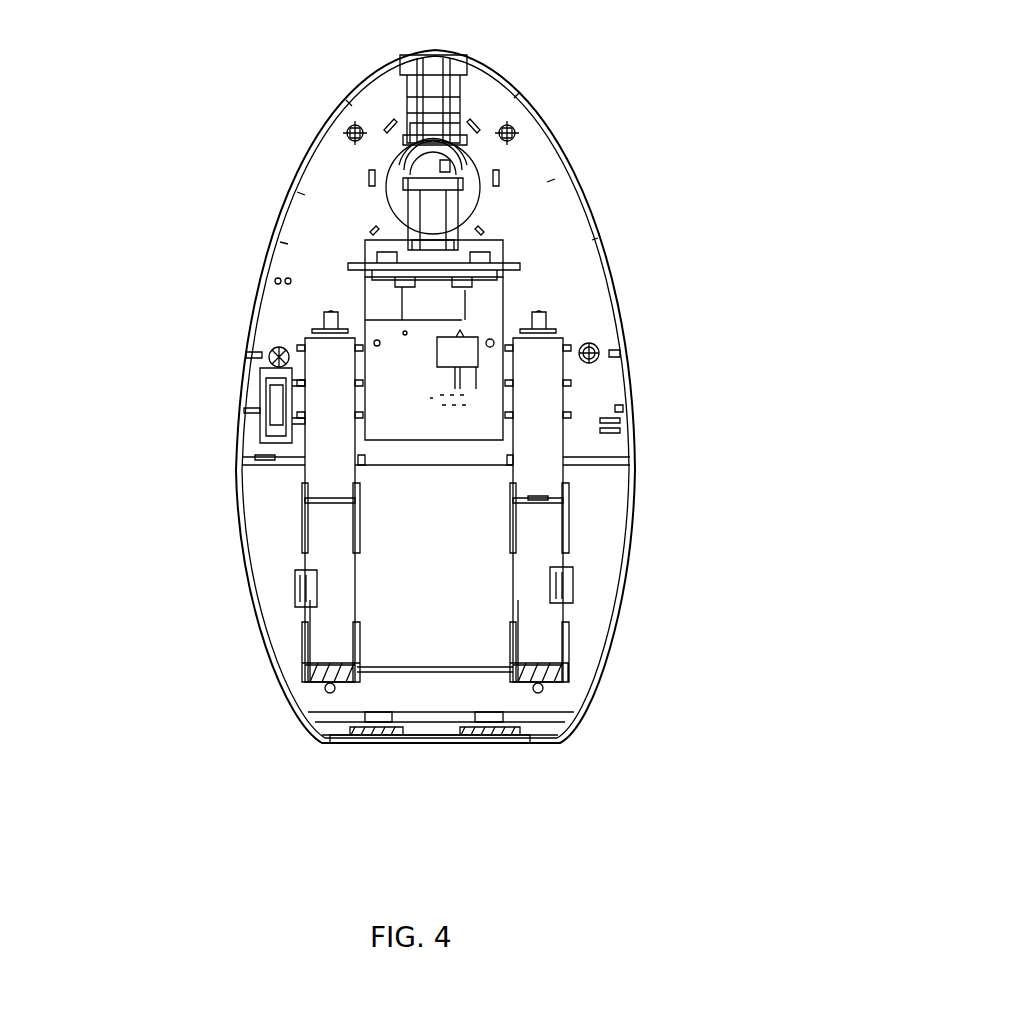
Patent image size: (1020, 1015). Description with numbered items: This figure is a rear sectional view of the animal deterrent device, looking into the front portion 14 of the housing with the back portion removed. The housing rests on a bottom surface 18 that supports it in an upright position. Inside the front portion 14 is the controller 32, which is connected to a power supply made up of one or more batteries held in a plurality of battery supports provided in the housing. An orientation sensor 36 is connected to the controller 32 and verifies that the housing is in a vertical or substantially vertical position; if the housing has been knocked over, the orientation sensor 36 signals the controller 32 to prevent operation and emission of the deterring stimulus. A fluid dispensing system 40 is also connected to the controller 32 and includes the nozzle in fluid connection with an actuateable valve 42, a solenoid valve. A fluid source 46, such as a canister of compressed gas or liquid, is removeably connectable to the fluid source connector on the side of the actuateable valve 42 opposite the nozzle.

The front portion 14 is at (340, 98).
The bottom surface 18 is at (320, 738).
The controller 32 is at (490, 300).
The orientation sensor 36 is at (462, 352).
The fluid dispensing system 40 is at (478, 152).
The actuateable valve 42 is at (400, 218).
The fluid source 46 is at (410, 300).